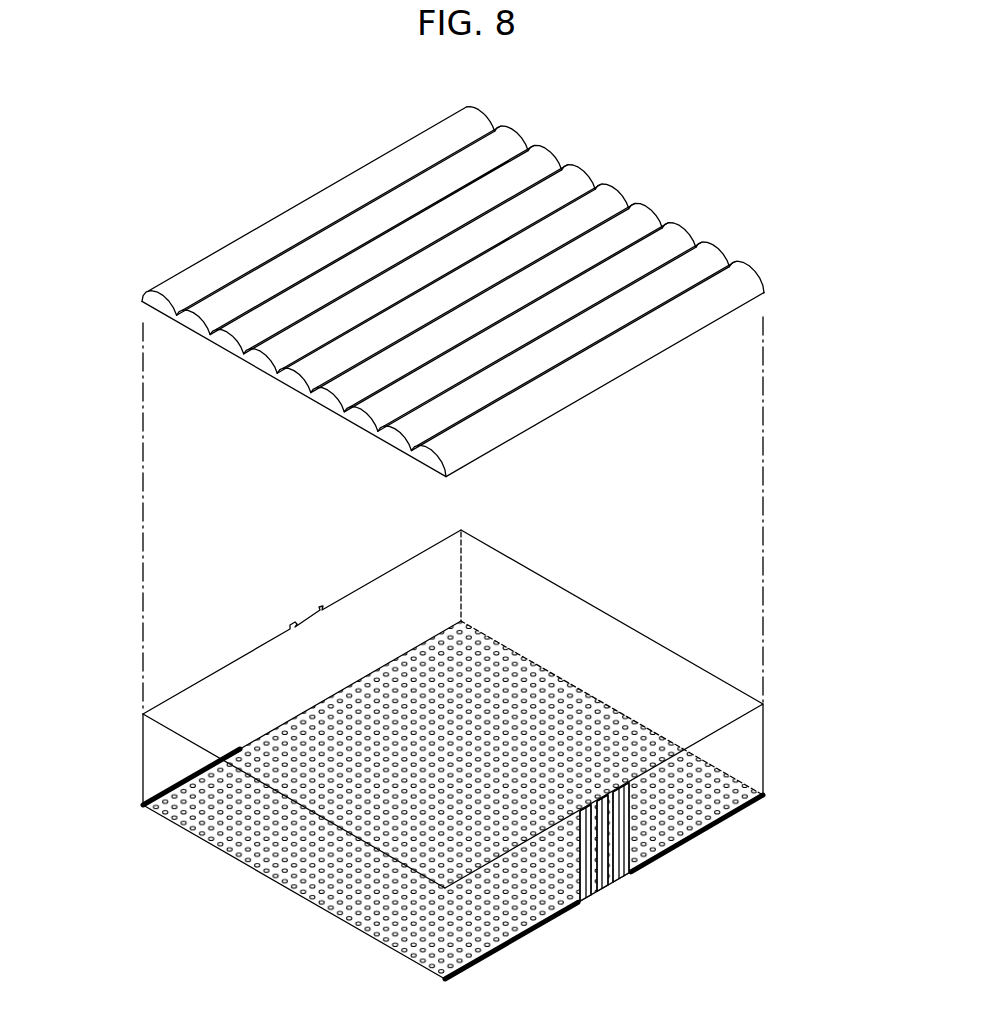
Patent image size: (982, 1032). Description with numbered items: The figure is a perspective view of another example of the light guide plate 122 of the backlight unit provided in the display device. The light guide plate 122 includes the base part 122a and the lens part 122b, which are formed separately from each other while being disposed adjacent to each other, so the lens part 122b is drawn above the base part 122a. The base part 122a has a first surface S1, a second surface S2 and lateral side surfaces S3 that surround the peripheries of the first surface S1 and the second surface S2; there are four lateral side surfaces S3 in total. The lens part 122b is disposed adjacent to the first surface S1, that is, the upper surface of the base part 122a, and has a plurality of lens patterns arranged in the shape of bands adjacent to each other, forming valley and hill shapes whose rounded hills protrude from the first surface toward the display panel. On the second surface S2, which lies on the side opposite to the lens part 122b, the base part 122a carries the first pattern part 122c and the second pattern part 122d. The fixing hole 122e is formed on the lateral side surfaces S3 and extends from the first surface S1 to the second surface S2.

The light guide plate 122 is at (453, 398).
The base part 122a is at (153, 768).
The lens part 122b is at (185, 286).
The first pattern part 122c is at (262, 846).
The second pattern part 122d is at (141, 810).
The fixing hole 122e is at (603, 882).
The first surface S1 is at (582, 637).
The second surface S2 is at (330, 897).
The lateral side surfaces S3 is at (727, 762).